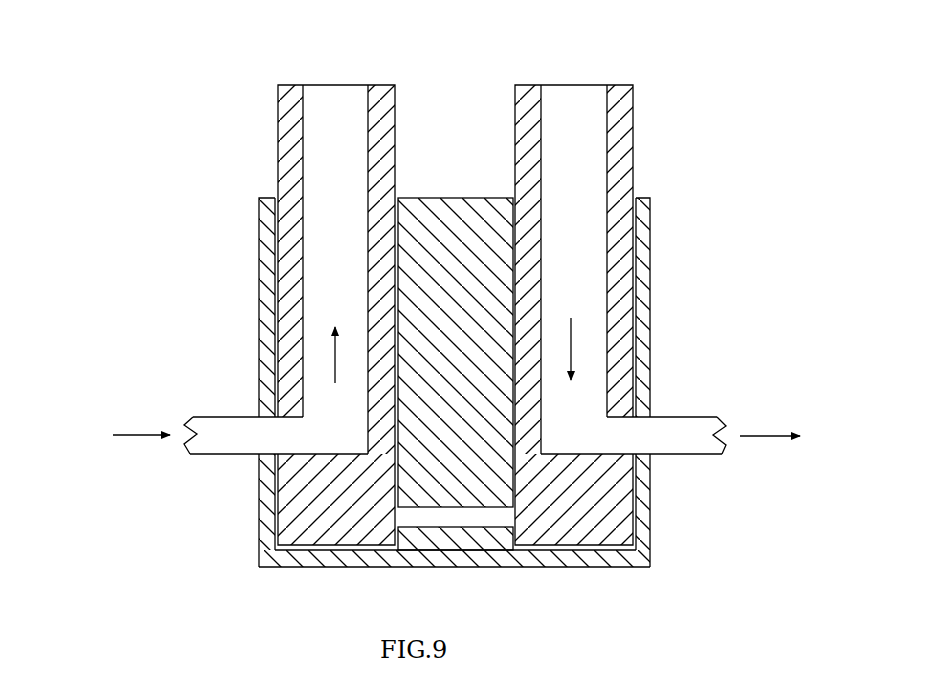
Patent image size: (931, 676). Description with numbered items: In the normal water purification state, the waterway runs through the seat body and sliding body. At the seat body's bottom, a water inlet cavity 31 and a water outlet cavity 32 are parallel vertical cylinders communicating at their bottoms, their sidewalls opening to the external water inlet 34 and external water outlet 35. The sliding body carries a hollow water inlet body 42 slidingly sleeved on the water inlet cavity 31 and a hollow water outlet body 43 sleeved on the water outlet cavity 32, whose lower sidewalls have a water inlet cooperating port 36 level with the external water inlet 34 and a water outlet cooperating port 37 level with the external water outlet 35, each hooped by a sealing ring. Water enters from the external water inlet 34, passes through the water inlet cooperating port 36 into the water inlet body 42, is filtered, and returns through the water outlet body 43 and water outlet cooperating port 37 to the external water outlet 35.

The water inlet cavity 31 is at (380, 388).
The water outlet cavity 32 is at (508, 573).
The external water inlet 34 is at (177, 370).
The external water outlet 35 is at (725, 373).
The water inlet cooperating port 36 is at (250, 328).
The water outlet cooperating port 37 is at (648, 338).
The water inlet body 42 is at (227, 276).
The water outlet body 43 is at (666, 288).